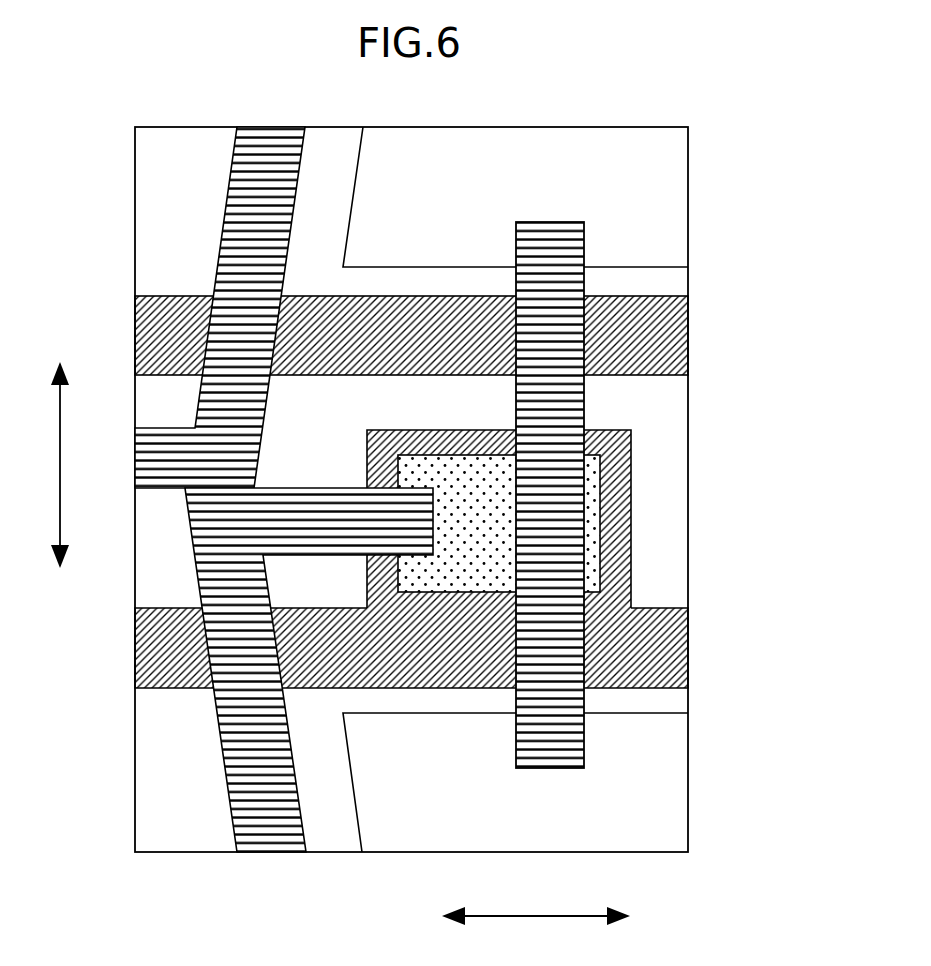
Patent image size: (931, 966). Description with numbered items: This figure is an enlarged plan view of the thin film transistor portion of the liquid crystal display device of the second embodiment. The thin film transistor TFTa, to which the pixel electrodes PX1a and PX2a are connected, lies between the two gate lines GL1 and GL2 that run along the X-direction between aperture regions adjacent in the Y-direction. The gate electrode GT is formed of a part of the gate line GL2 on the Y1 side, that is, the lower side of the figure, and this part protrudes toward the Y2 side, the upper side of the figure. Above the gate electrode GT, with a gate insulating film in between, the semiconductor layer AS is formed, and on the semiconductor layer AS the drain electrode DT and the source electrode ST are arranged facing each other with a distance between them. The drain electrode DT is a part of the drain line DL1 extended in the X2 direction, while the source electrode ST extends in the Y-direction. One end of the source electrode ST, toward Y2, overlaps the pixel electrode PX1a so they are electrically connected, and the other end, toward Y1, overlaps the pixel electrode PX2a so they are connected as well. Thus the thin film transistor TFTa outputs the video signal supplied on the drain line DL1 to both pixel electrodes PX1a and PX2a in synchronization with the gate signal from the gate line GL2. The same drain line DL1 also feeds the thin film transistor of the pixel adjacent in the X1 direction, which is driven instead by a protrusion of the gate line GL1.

The drain line DL1 is at (230, 263).
The source electrode ST is at (552, 237).
The pixel electrode PX1a is at (672, 218).
The gate line GL1 is at (665, 337).
The thin film transistor TFTa is at (584, 507).
The gate electrode GT is at (627, 525).
The semiconductor layer AS is at (595, 553).
The gate line GL2 is at (662, 652).
The pixel electrode PX2a is at (672, 767).
The drain electrode DT is at (295, 533).
The X1-direction X1 is at (517, 919).
The X2-direction X2 is at (658, 919).
The Y1-direction Y1 is at (63, 596).
The Y2-direction Y2 is at (63, 444).